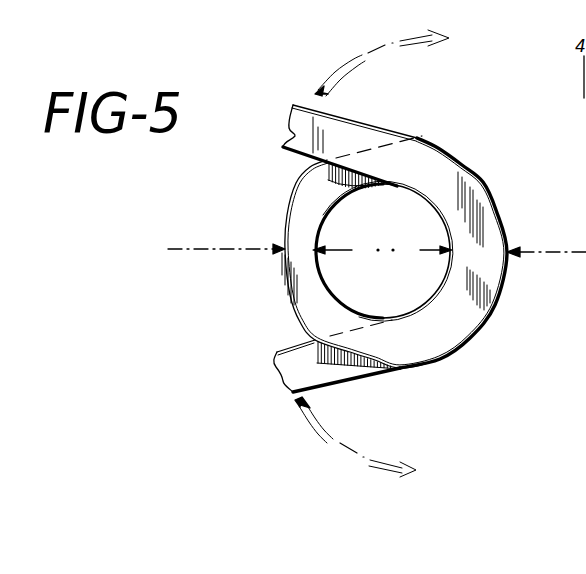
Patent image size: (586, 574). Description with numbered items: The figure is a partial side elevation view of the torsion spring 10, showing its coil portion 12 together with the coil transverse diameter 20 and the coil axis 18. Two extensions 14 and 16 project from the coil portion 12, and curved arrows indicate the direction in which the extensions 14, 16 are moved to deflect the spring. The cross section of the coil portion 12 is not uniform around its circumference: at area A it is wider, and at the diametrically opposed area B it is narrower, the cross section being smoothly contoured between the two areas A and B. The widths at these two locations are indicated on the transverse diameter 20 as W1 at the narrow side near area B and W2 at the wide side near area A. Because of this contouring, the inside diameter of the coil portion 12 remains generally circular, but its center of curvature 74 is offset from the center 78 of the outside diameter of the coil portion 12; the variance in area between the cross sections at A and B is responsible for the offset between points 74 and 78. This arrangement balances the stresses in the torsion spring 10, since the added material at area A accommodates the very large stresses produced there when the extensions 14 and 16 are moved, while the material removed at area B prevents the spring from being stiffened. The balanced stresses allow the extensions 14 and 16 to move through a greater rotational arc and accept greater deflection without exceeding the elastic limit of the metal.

The torsion spring 10 is at (478, 172).
The coil portion 12 is at (463, 343).
The extension 14 is at (291, 132).
The extension 16 is at (297, 372).
The coil axis 18 is at (378, 250).
The center of inside diameter 74 is at (308, 345).
The center of outside diameter 78 is at (393, 251).
The coil transverse diameter 20 is at (188, 248).
The narrow width W1 is at (318, 254).
The wide width W2 is at (452, 255).
The area A is at (508, 258).
The area B is at (282, 254).